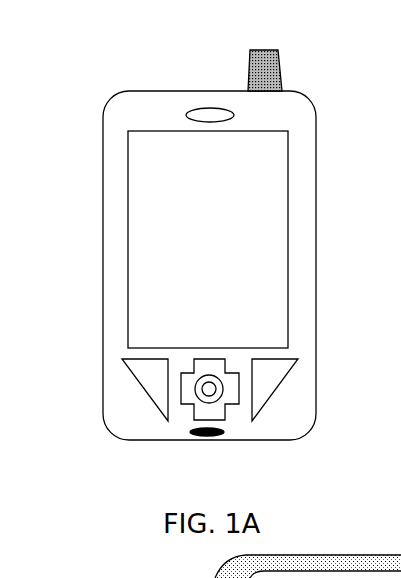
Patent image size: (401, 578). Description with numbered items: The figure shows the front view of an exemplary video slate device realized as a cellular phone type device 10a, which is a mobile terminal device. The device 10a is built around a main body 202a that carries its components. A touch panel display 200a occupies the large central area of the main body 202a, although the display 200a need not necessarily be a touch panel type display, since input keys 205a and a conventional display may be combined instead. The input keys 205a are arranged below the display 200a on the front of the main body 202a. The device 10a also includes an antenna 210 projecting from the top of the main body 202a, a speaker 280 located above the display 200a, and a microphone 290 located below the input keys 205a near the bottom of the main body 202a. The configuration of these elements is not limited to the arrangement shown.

The cellular phone type device 10a is at (78, 63).
The main body 202a is at (313, 183).
The antenna 210 is at (282, 63).
The speaker 280 is at (195, 105).
The touch panel display 200a is at (152, 225).
The input keys 205a is at (188, 404).
The microphone 290 is at (227, 436).